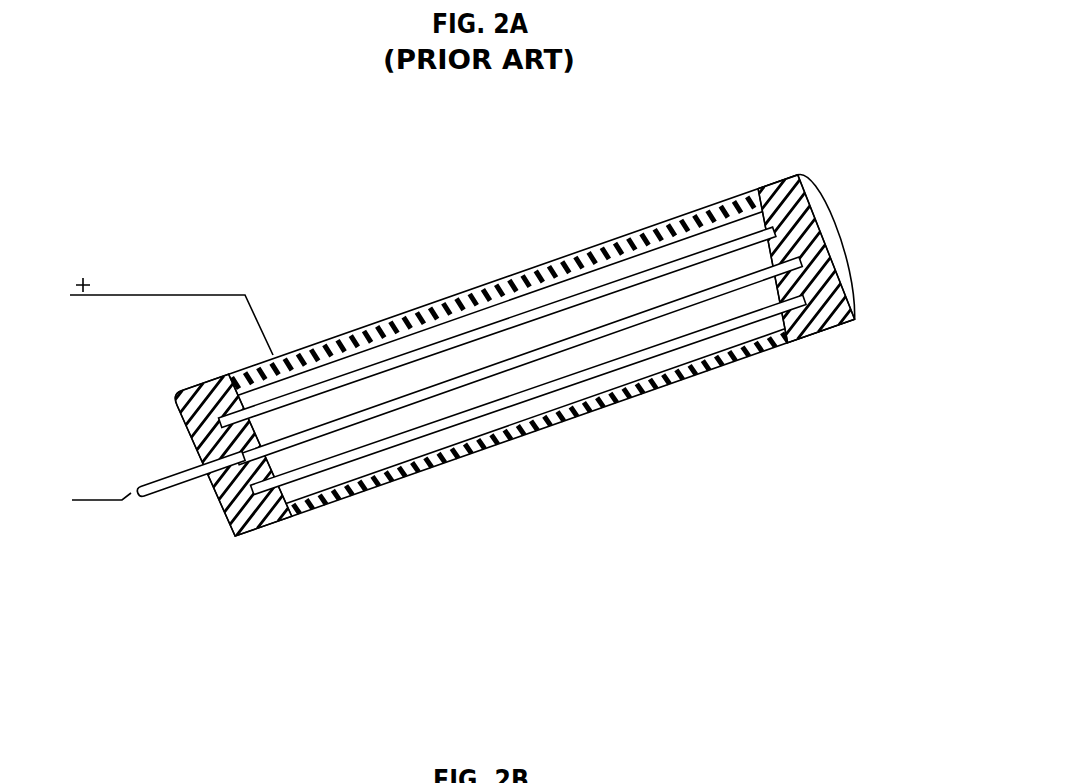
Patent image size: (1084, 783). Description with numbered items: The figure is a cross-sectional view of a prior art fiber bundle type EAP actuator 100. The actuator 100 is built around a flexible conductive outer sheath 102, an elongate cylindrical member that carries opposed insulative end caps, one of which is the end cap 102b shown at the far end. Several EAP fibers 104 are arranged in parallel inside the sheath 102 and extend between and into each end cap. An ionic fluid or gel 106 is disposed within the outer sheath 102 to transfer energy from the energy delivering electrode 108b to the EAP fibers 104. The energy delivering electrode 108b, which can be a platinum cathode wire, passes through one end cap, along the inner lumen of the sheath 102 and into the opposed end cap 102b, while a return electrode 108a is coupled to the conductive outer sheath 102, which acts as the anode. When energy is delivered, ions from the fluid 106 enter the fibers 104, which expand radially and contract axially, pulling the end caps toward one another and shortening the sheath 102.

The EAP actuator 100 is at (225, 185).
The flexible conductive outer sheath 102 is at (577, 251).
The insulative end cap 102b is at (822, 239).
The EAP fibers 104 is at (398, 362).
The ionic fluid or gel 106 is at (578, 399).
The return electrode 108a is at (135, 485).
The energy delivering electrode 108b is at (143, 295).